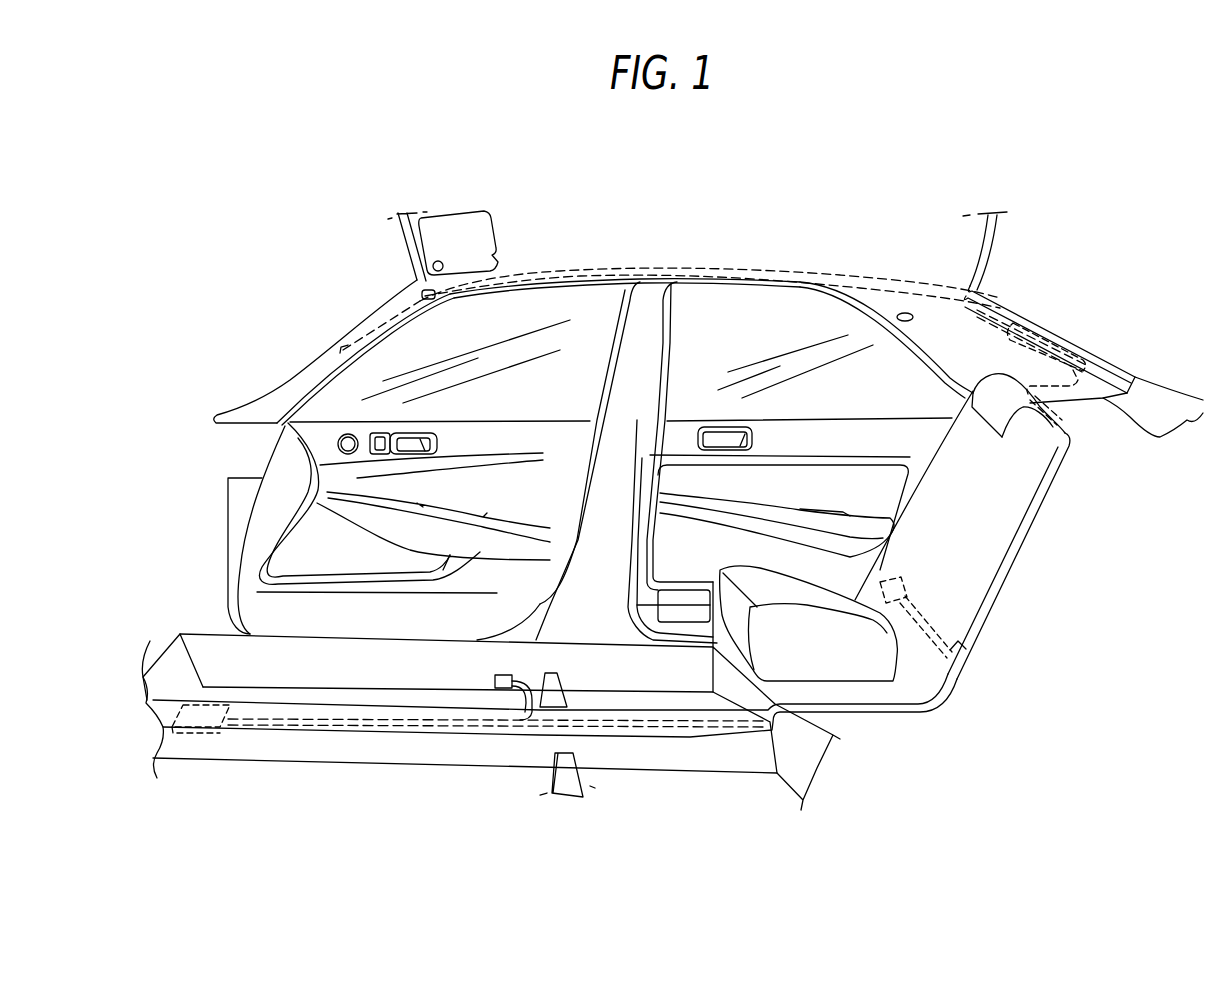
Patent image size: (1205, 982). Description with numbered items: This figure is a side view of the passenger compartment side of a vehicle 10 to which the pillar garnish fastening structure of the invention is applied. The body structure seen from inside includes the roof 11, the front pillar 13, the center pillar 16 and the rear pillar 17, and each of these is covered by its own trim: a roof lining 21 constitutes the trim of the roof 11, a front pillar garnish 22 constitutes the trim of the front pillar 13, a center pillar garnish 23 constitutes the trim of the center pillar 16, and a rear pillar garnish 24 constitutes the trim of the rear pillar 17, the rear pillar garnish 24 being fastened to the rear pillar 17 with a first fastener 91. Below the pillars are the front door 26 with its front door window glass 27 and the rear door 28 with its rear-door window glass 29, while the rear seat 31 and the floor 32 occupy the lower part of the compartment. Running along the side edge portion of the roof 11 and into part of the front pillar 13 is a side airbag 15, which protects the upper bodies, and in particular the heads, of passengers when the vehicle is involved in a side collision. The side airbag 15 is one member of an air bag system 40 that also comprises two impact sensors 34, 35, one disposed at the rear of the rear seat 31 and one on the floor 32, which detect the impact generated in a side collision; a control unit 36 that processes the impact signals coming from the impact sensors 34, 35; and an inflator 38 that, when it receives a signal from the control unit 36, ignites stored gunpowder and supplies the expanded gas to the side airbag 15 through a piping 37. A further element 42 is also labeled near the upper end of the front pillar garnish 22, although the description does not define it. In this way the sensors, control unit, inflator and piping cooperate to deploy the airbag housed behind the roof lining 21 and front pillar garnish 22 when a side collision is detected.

The vehicle 10 is at (262, 201).
The roof 11 is at (509, 213).
The front pillar 13 is at (297, 358).
The side airbag 15 is at (749, 270).
The center pillar 16 is at (621, 321).
The rear pillar 17 is at (1004, 296).
The roof lining 21 is at (548, 233).
The front pillar garnish 22 is at (362, 318).
The center pillar garnish 23 is at (651, 315).
The rear pillar garnish 24 is at (956, 330).
The front door 26 is at (285, 466).
The front door window glass 27 is at (325, 409).
The rear door 28 is at (882, 486).
The rear-door window glass 29 is at (903, 398).
The rear seat 31 is at (968, 567).
The floor 32 is at (680, 784).
The impact sensor 34 is at (900, 607).
The impact sensor 35 is at (495, 682).
The control unit 36 is at (199, 736).
The piping 37 is at (1010, 312).
The inflator 38 is at (1058, 345).
The air bag system 40 is at (983, 638).
The bracket 42 is at (423, 292).
The first fastener 91 is at (901, 315).